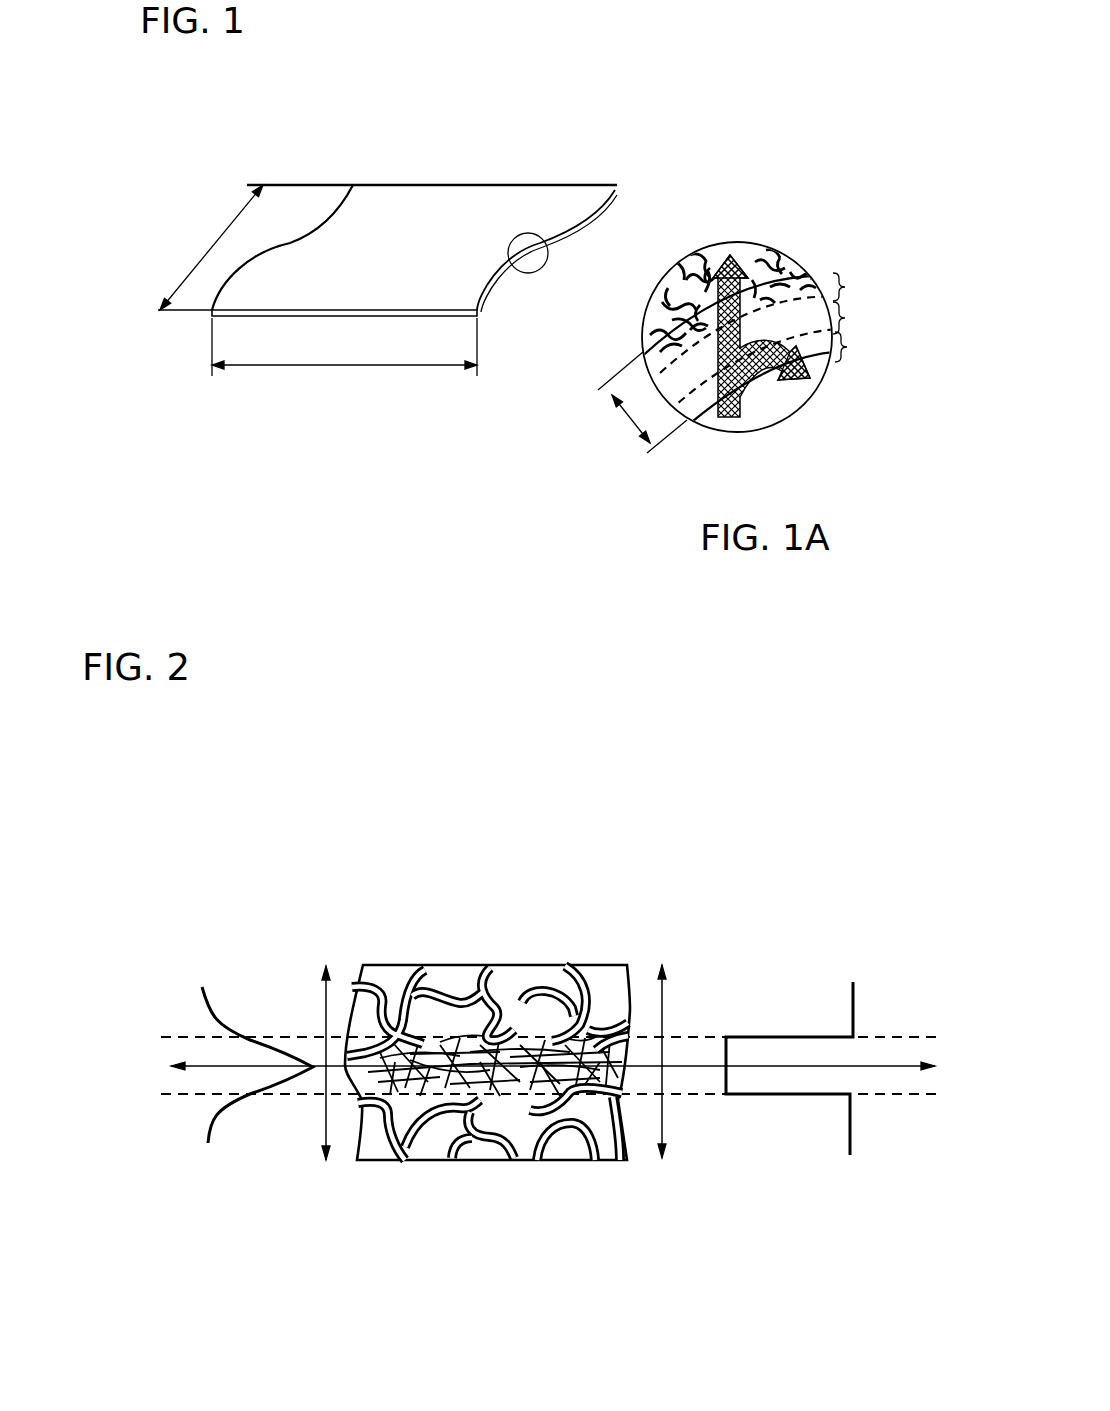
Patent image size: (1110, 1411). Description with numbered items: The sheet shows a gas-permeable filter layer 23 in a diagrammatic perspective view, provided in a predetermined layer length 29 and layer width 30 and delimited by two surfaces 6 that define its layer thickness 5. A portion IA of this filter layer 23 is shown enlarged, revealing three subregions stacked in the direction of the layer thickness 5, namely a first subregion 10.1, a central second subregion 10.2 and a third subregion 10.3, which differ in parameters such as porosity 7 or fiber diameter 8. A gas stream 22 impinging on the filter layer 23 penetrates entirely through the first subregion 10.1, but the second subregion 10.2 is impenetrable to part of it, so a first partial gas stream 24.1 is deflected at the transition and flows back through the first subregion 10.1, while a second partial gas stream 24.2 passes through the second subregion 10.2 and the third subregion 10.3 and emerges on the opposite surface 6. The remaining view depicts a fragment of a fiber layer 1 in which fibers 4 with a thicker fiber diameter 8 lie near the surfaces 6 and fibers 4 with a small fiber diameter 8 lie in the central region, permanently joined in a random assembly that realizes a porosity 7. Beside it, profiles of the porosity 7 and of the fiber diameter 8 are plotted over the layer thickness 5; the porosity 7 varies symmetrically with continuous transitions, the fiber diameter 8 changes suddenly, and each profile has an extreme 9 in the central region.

In FIG. 2, the fiber layer 1 is at (494, 955).
In FIG. 2, the fibers 4 is at (421, 972).
In FIG. 1A, the layer thickness 5 is at (617, 395).
In FIG. 2, the layer thickness 5 is at (339, 1119).
In FIG. 1, the surfaces 6 is at (570, 202).
In FIG. 2, the surfaces 6 is at (569, 966).
In FIG. 2, the porosity 7 is at (212, 1126).
In FIG. 2, the fiber diameter 8 is at (514, 1158).
In FIG. 2, the extreme 9 is at (317, 1042).
In FIG. 1A, the first subregion 10.1 is at (800, 380).
In FIG. 1A, the second subregion 10.2 is at (796, 332).
In FIG. 1A, the third subregion 10.3 is at (782, 306).
In FIG. 1A, the gas stream 22 is at (753, 398).
In FIG. 1, the filter layer 23 is at (415, 217).
In FIG. 1A, the first partial gas stream 24.1 is at (803, 382).
In FIG. 1A, the second partial gas stream 24.2 is at (738, 258).
In FIG. 1, the layer length 29 is at (344, 347).
In FIG. 1, the layer width 30 is at (210, 247).
In FIG. 1, the portion IA is at (547, 270).